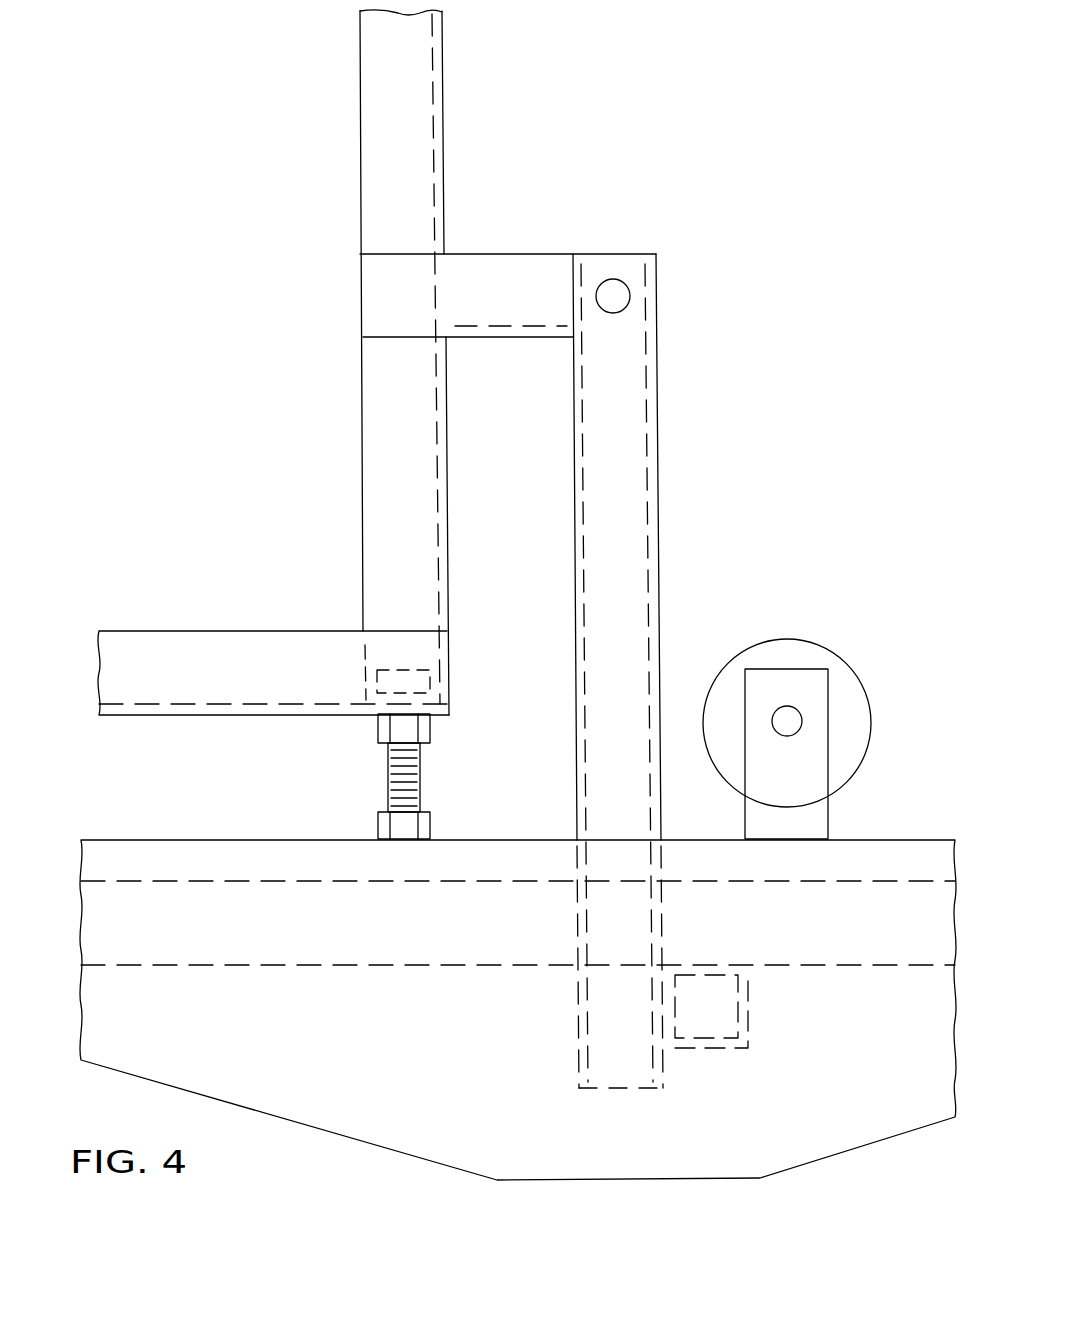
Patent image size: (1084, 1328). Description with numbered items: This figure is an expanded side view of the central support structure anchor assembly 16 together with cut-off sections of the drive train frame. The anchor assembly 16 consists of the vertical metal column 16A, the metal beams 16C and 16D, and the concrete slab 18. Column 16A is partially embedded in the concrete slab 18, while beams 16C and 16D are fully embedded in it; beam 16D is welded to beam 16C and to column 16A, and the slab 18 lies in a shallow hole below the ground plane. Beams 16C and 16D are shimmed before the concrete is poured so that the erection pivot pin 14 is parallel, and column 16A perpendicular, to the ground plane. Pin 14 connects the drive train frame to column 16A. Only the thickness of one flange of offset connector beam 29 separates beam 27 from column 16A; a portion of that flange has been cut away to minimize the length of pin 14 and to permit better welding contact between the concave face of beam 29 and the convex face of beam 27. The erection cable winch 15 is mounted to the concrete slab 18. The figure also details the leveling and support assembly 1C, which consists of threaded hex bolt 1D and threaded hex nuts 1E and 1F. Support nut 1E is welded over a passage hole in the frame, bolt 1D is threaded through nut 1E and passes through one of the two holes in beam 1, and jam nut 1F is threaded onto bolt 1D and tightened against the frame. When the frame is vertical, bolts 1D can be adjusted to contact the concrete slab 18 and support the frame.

The beam 1 is at (273, 615).
The leveling and support assembly 1C is at (390, 776).
The threaded hex bolt 1D is at (388, 787).
The threaded hex nut 1E is at (375, 730).
The jam nut 1F is at (388, 670).
The erection pivot pin 14 is at (613, 279).
The erection cable winch 15 is at (840, 660).
The central support structure anchor assembly 16 is at (613, 549).
The vertical metal column 16A is at (658, 493).
The metal beam 16C is at (432, 939).
The metal beam 16D is at (730, 1048).
The concrete slab 18 is at (170, 840).
The beam 27 is at (445, 213).
The offset connector beam 29 is at (523, 337).